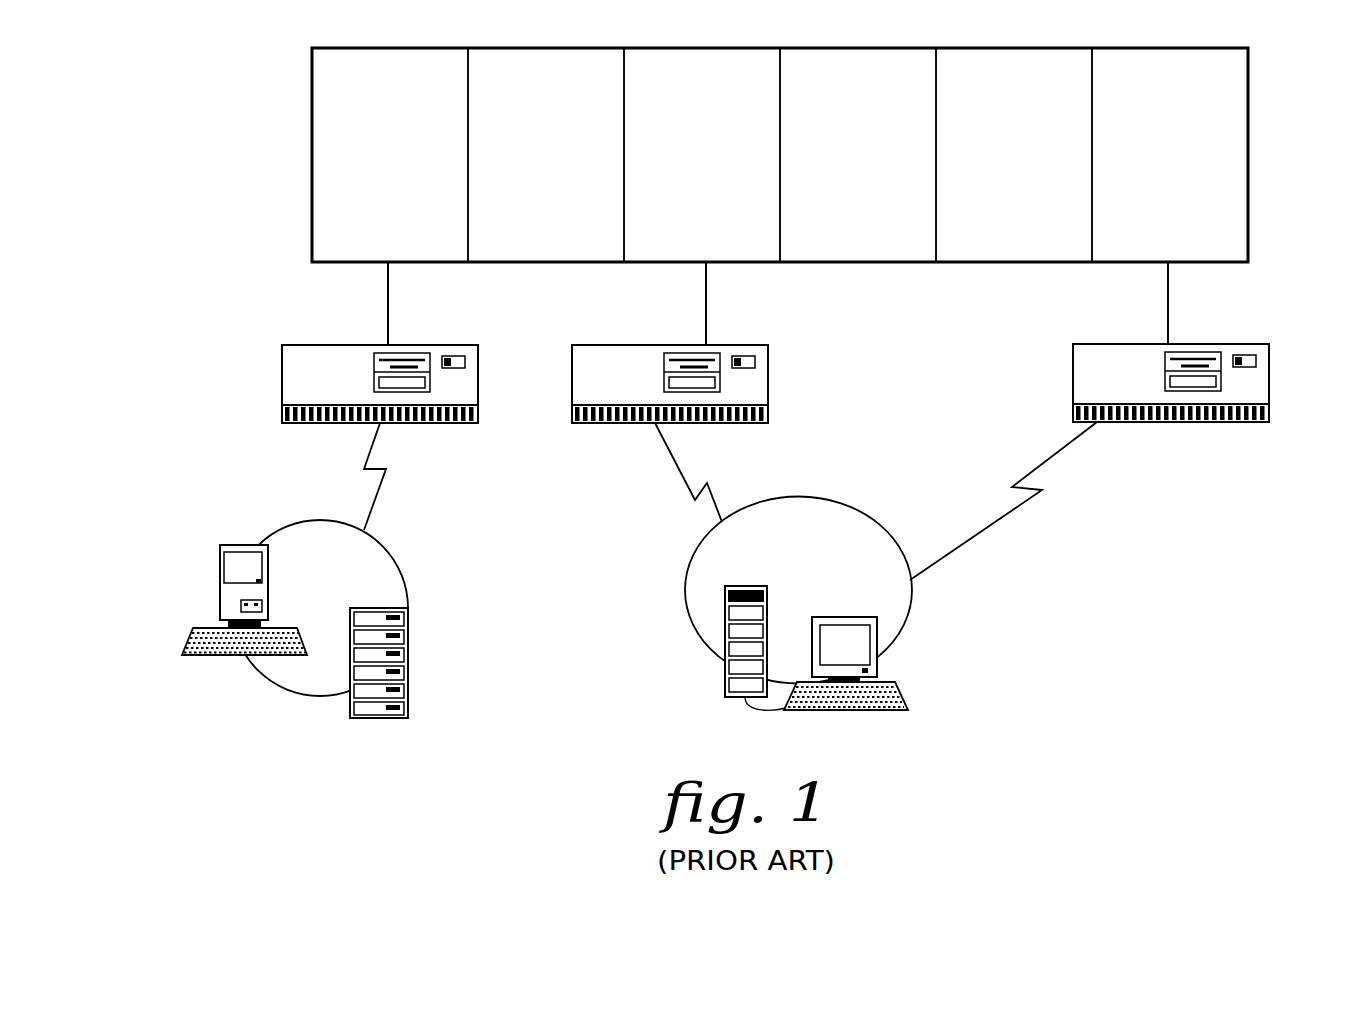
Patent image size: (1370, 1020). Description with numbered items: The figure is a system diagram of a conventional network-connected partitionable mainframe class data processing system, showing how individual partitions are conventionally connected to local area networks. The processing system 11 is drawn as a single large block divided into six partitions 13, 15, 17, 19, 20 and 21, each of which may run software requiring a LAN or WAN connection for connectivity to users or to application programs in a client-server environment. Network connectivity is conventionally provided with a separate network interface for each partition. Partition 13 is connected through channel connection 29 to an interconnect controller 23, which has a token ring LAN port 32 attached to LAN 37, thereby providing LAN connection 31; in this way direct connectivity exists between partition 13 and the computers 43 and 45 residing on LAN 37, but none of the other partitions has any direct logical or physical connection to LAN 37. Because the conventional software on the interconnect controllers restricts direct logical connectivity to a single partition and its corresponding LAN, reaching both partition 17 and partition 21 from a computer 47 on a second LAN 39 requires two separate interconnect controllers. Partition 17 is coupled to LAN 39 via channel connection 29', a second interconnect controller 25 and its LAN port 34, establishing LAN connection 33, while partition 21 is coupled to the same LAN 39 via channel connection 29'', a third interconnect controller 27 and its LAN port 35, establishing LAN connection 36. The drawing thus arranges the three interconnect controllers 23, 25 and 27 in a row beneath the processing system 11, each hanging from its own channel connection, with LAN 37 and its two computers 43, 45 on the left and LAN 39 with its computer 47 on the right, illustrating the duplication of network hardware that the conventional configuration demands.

The processing system 11 is at (1248, 142).
The partition 13 is at (372, 165).
The partition 15 is at (520, 165).
The partition 17 is at (668, 164).
The partition 19 is at (840, 163).
The partition 20 is at (992, 162).
The partition 21 is at (1142, 163).
The IBM 3172 Interconnect Controller 23 is at (282, 379).
The IBM 3172 Interconnect Controller 25 is at (769, 373).
The IBM 3172 Interconnect Controller 27 is at (1270, 382).
The channel connection 29 is at (292, 303).
The channel connection 29' is at (788, 303).
The channel connection 29'' is at (1223, 303).
The LAN connection 31 is at (367, 520).
The token ring LAN port 32 is at (383, 425).
The LAN connection 33 is at (677, 477).
The LAN port 34 is at (662, 427).
The LAN port 35 is at (1100, 422).
The LAN connection 36 is at (983, 532).
The LAN 37 is at (402, 580).
The LAN 39 is at (873, 516).
The computer 43 is at (220, 553).
The computer 45 is at (408, 687).
The computer 47 is at (877, 665).